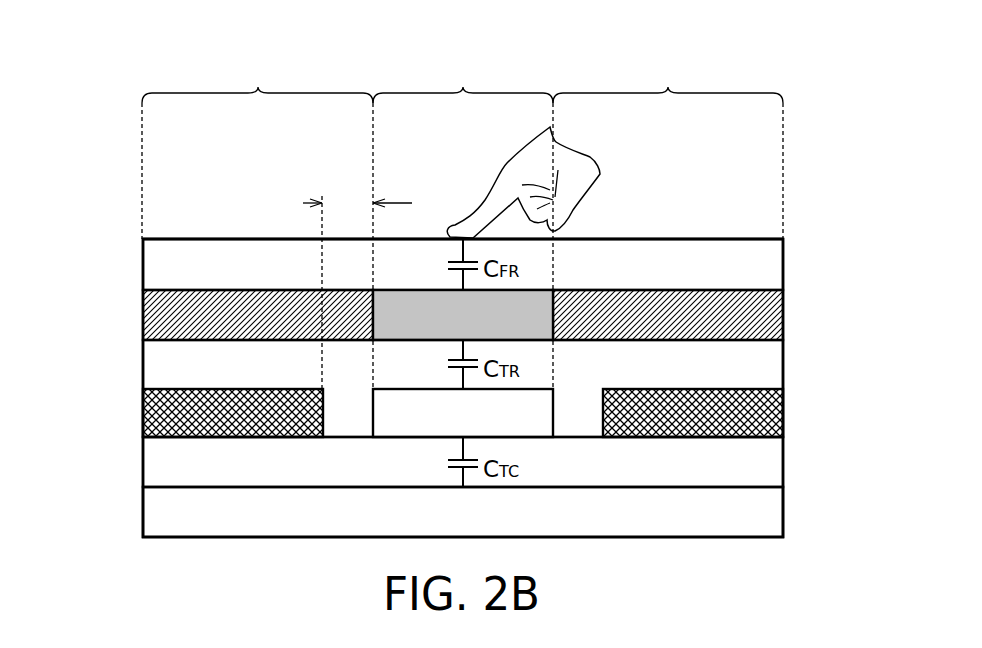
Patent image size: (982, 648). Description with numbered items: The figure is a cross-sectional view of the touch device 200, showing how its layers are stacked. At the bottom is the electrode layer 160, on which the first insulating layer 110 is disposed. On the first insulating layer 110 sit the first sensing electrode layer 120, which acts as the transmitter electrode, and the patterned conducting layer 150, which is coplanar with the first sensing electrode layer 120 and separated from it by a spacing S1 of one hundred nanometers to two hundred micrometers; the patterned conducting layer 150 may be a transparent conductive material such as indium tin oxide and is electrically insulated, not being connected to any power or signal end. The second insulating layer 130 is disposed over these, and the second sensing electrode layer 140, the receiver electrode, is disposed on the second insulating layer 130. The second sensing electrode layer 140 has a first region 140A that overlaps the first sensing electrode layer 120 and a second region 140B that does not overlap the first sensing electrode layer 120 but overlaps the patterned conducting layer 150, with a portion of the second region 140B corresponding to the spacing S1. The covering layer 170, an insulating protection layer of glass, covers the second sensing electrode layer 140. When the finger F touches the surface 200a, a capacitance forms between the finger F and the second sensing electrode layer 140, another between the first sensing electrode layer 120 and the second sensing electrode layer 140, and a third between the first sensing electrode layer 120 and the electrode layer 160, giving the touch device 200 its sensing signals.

The touch device 200 is at (83, 67).
The surface 200a is at (703, 239).
The covering layer 170 is at (772, 266).
The second sensing electrode layer 140 is at (772, 316).
The first region 140A is at (463, 224).
The second region 140B is at (462, 149).
The second insulating layer 130 is at (772, 364).
The patterned conducting layer 150 is at (772, 414).
The first sensing electrode layer 120 is at (412, 407).
The first insulating layer 110 is at (772, 462).
The electrode layer 160 is at (772, 512).
The spacing S1 is at (357, 282).
The finger F is at (583, 183).